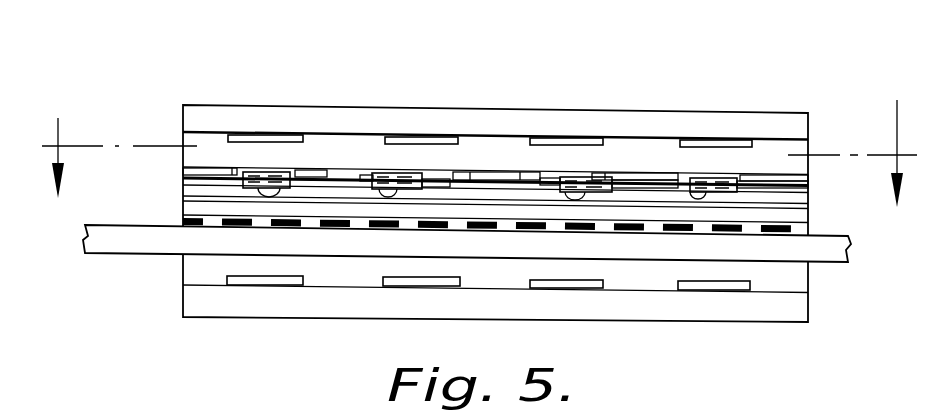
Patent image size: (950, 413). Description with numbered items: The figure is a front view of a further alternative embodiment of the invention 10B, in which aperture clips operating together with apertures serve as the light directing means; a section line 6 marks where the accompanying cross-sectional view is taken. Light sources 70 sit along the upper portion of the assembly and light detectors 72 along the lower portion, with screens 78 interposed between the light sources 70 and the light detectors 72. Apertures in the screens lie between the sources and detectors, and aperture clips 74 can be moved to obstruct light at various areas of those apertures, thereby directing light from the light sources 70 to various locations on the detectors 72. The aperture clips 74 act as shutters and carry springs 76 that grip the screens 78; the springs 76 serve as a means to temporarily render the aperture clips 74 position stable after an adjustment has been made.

The embodiment of the invention 10B is at (692, 88).
The section line 6- 6 is at (476, 153).
The light sources 70 is at (266, 134).
The light detectors 72 is at (275, 284).
The aperture clips 74 is at (247, 170).
The springs 76 is at (280, 186).
The screens 78 is at (790, 190).